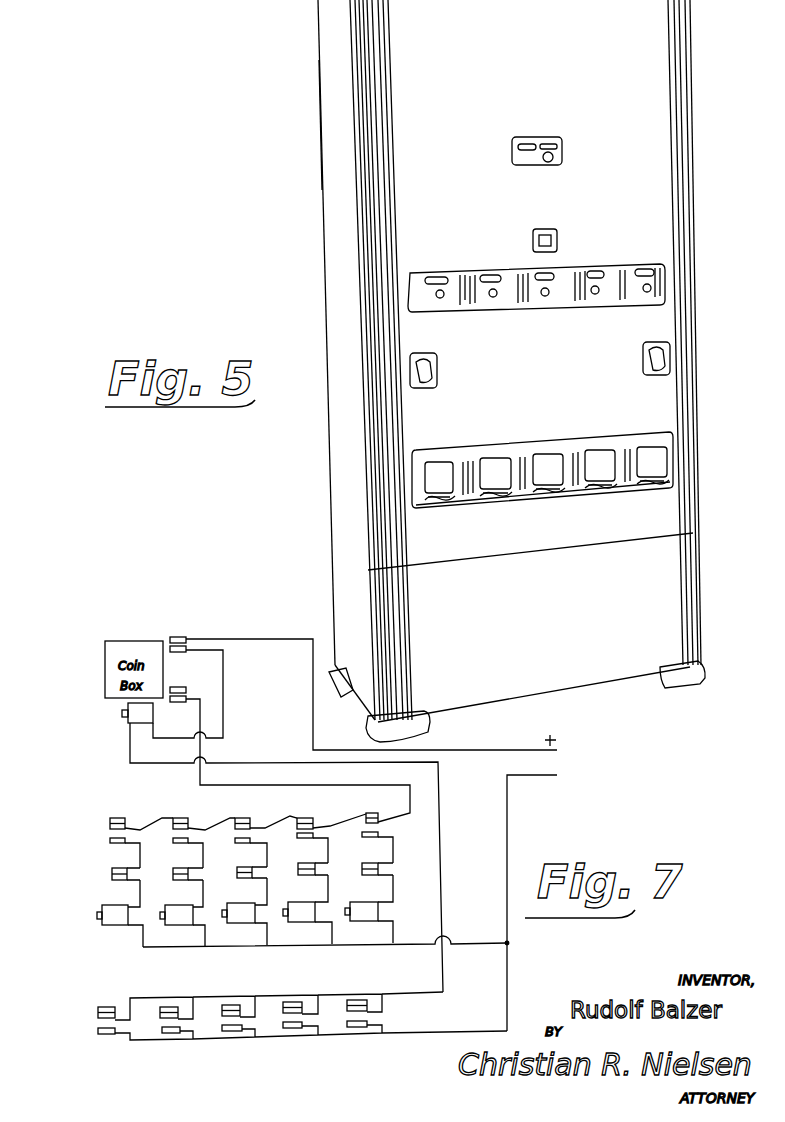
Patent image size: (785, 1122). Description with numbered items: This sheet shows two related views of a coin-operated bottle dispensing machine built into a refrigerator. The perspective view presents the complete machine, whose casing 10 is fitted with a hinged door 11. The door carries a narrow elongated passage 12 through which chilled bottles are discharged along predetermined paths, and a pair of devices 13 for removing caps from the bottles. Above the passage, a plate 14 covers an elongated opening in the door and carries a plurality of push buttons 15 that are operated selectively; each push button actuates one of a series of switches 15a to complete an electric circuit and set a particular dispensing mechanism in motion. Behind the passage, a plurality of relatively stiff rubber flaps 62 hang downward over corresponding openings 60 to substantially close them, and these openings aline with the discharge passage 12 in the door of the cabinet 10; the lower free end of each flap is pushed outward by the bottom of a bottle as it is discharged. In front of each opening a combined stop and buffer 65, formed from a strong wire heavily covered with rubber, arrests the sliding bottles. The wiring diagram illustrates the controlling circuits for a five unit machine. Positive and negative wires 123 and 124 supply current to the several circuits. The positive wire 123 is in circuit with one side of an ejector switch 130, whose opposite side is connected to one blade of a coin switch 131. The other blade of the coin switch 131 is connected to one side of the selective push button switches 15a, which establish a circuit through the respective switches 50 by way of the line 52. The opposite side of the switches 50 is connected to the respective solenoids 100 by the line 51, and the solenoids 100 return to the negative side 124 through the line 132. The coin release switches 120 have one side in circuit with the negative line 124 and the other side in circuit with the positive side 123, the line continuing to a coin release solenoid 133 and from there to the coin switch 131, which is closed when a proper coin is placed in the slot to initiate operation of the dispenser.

In FIG. 5, the casing 10 is at (655, 616).
In FIG. 5, the hinged door 11 is at (403, 192).
In FIG. 5, the narrow elongated passage 12 is at (583, 495).
In FIG. 5, the cap removing devices 13 is at (426, 374).
In FIG. 5, the plate 14 is at (574, 304).
In FIG. 5, the push buttons 15 is at (440, 298).
In FIG. 7, the selective push button switches 15a is at (363, 807).
In FIG. 7, the switches 50 is at (82, 893).
In FIG. 7, the line 51 is at (141, 890).
In FIG. 7, the line 52 is at (203, 852).
In FIG. 5, the opening 60 is at (643, 453).
In FIG. 5, the rubber flap 62 is at (548, 463).
In FIG. 5, the combined stop and buffer 65 is at (497, 490).
In FIG. 7, the solenoids 100 is at (113, 972).
In FIG. 7, the coin release switches 120 is at (98, 1018).
In FIG. 7, the positive wire 123 is at (313, 717).
In FIG. 7, the negative wire 124 is at (520, 777).
In FIG. 7, the ejector switch 130 is at (176, 637).
In FIG. 7, the coin switch 131 is at (182, 684).
In FIG. 7, the line 132 is at (410, 946).
In FIG. 7, the coin release solenoid 133 is at (126, 727).